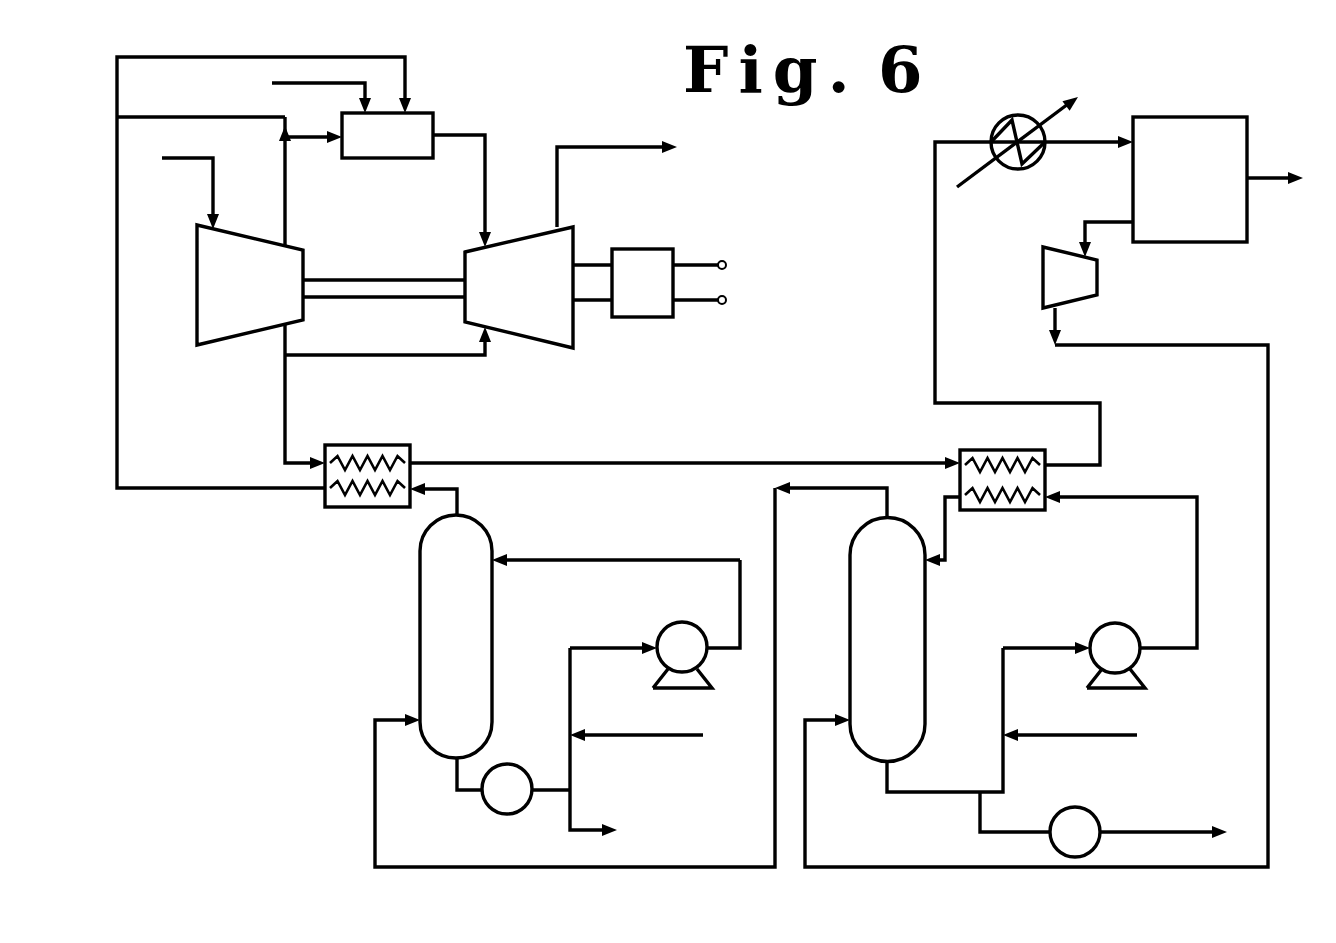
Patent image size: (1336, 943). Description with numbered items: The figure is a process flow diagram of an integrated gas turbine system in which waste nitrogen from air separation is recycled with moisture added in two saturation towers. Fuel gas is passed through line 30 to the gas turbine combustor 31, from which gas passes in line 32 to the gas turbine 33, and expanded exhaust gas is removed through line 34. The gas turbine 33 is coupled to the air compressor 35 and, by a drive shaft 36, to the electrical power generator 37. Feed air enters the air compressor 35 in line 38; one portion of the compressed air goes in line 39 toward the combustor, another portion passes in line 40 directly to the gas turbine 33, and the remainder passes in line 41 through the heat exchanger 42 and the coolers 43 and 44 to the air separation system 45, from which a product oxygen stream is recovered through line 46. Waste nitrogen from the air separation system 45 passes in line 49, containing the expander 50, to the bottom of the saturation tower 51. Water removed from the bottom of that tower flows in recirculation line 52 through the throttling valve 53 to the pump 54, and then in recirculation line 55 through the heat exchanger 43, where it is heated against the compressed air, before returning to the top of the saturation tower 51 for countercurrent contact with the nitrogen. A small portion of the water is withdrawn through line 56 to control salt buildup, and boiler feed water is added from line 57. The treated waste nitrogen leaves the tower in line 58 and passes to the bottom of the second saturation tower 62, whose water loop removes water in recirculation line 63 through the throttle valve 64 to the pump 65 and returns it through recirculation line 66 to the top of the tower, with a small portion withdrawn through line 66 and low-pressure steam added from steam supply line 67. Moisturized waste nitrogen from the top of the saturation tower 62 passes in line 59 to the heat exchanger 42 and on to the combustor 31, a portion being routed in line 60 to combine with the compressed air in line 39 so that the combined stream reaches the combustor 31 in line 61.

The fuel gas line 30 is at (298, 83).
The gas turbine combustor 31 is at (420, 112).
The combustion gas line 32 is at (470, 135).
The gas turbine 33 is at (520, 243).
The exhaust gas line 34 is at (582, 147).
The air compressor 35 is at (243, 338).
The drive shaft 36 is at (586, 265).
The electrical power generator 37 is at (645, 249).
The feed air line 38 is at (213, 195).
The compressed air line 39 is at (288, 200).
The compressed air line 40 is at (415, 357).
The compressed air line 41 is at (545, 463).
The heat exchanger 42 is at (367, 445).
The cooler 43 is at (1030, 510).
The cooler 44 is at (998, 117).
The air separation system 45 is at (1213, 117).
The product oxygen line 46 is at (1268, 177).
The waste nitrogen line 49 is at (1267, 442).
The expander 50 is at (1088, 303).
The saturation tower 51 is at (850, 575).
The recirculation line 52 is at (925, 792).
The throttling valve 53 is at (1063, 807).
The pump 54 is at (1122, 623).
The recirculation line 55 is at (1197, 590).
The water withdrawal line 56 is at (1140, 830).
The water supply line 57 is at (1095, 735).
The waste nitrogen line 58 is at (657, 867).
The moisturized waste nitrogen line 59 is at (198, 490).
The waste nitrogen line 60 is at (185, 117).
The combined stream line 61 is at (308, 143).
The saturation tower 62 is at (418, 575).
The recirculation line 63 is at (470, 792).
The throttle valve 64 is at (512, 765).
The pump 65 is at (690, 623).
The recirculation line 66 is at (560, 560).
The steam supply line 67 is at (663, 735).